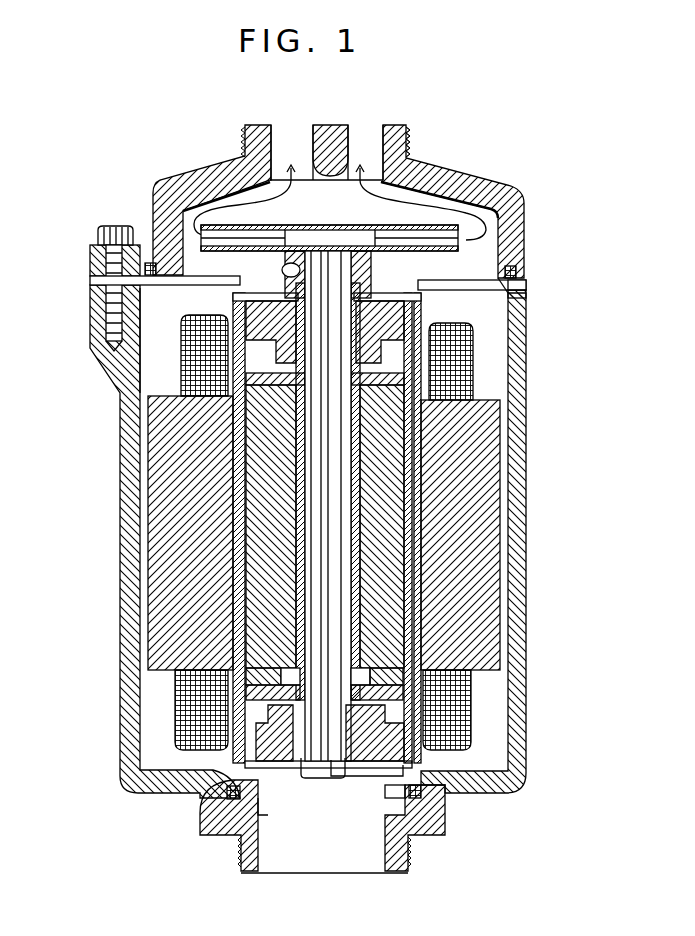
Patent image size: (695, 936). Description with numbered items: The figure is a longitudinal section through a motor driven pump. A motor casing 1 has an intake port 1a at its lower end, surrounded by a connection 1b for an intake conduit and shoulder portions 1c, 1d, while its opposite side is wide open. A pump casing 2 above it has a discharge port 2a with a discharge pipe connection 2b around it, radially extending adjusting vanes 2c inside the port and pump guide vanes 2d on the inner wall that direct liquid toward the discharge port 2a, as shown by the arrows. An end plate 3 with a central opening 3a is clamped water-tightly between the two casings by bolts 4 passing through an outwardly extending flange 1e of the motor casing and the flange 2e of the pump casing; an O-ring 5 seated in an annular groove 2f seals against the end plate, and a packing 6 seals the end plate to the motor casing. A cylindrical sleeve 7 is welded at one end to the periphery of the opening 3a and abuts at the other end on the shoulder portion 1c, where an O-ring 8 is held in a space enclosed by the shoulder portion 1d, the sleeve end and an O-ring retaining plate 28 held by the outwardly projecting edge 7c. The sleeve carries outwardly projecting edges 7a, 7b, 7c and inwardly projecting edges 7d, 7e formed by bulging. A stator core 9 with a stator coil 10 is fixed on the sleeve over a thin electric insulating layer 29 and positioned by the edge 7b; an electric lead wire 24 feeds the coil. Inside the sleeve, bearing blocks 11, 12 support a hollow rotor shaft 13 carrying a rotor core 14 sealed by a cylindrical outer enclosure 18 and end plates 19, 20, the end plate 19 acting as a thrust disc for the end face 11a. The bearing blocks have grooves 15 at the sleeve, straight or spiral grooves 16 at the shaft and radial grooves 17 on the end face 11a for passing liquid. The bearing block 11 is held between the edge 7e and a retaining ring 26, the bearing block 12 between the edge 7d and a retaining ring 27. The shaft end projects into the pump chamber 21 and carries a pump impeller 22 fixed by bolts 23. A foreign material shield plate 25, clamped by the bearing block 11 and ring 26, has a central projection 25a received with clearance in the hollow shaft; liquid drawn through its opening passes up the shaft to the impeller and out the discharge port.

The motor casing 1 is at (512, 576).
The intake port 1a is at (332, 858).
The connection for an intake conduit 1b is at (402, 858).
The shoulder portion 1c is at (250, 800).
The shoulder portion 1d is at (226, 795).
The outwardly extending flange 1e is at (85, 318).
The pump casing 2 is at (450, 175).
The discharge port 2a is at (372, 122).
The discharge pipe connection 2b is at (402, 120).
The adjusting vanes 2c is at (320, 124).
The pump guide vanes 2d is at (404, 170).
The outwardly extending flange 2e is at (137, 258).
The annular groove 2f is at (515, 250).
The end plate 3 is at (456, 276).
The opening 3a is at (228, 280).
The bolts 4 is at (96, 220).
The O-ring 5 is at (520, 277).
The packing 6 is at (133, 292).
The cylindrical sleeve 7 is at (410, 642).
The outwardly projecting edge 7a is at (204, 336).
The outwardly projecting edge 7b is at (190, 417).
The outwardly projecting edge 7c is at (216, 782).
The inwardly projecting edge 7d is at (204, 377).
The inwardly projecting edge 7e is at (228, 708).
The O-ring 8 is at (432, 818).
The stator core 9 is at (482, 541).
The stator coil 10 is at (446, 358).
The bearing block 11 is at (368, 768).
The end face 11a is at (370, 682).
The bearing block 12 is at (393, 326).
The hollow rotor shaft 13 is at (346, 452).
The rotor core 14 is at (388, 494).
The grooves 15 is at (236, 318).
The straight or spiral grooves 16 is at (297, 346).
The radial grooves 17 is at (375, 733).
The cylindrical outer enclosure 18 is at (404, 586).
The end plate 19 is at (266, 682).
The end plate 20 is at (370, 378).
The pump chamber 21 is at (516, 214).
The pump impeller 22 is at (330, 226).
The bolts 23 is at (270, 262).
The electric lead wire 24 is at (512, 287).
The foreign material shield plate 25 is at (276, 768).
The central projection 25a is at (312, 752).
The retaining ring 26 is at (382, 790).
The retaining ring 27 is at (406, 284).
The O-ring retaining plate 28 is at (414, 778).
The electric insulating layer 29 is at (222, 527).